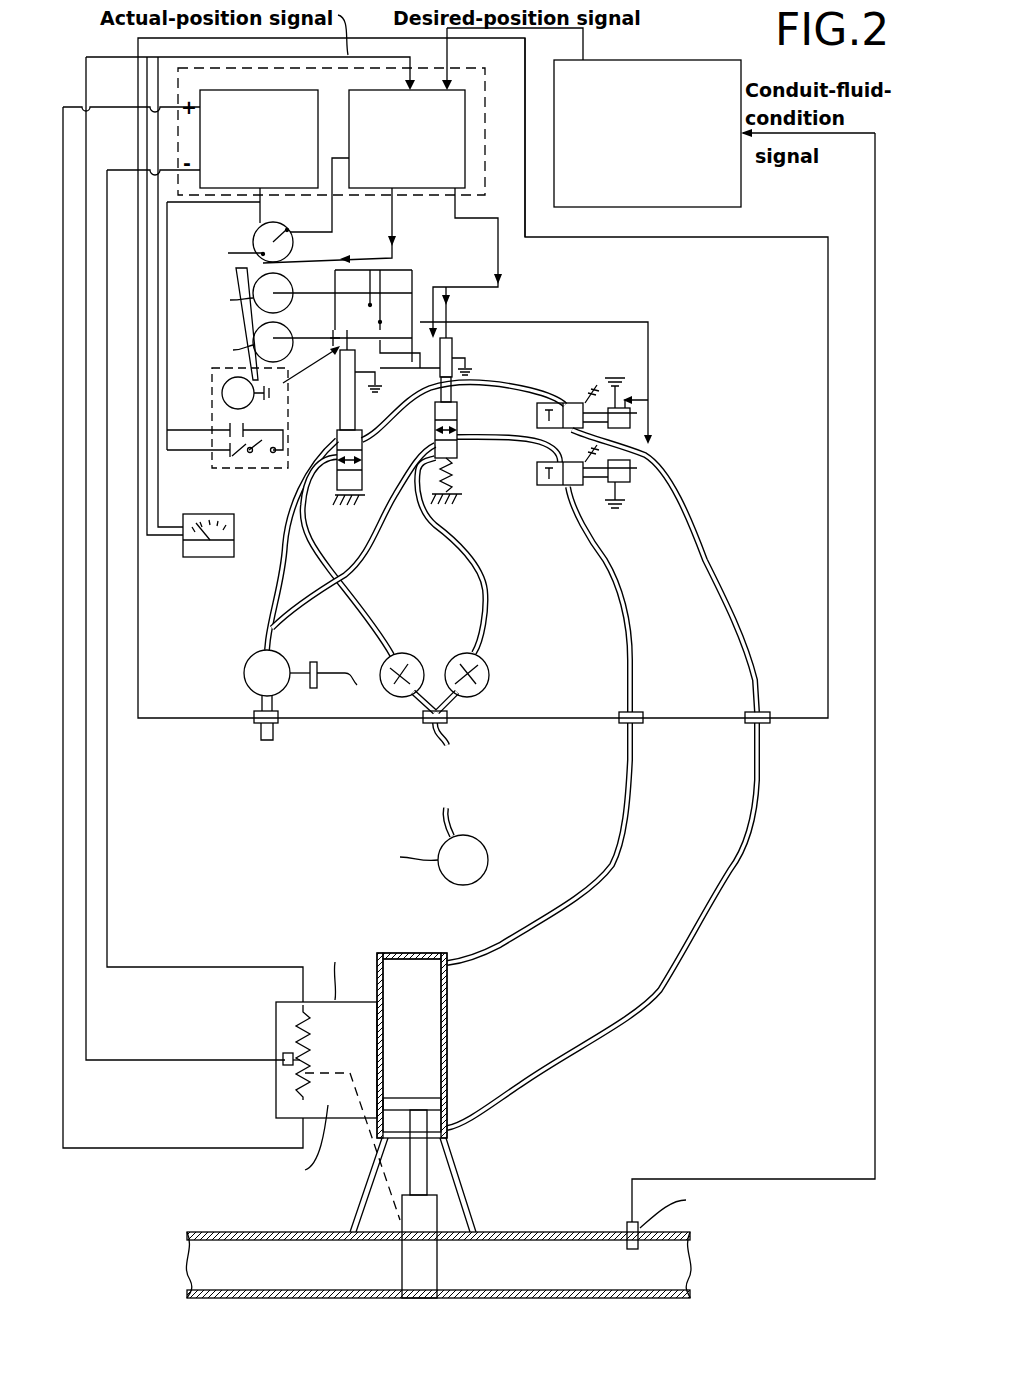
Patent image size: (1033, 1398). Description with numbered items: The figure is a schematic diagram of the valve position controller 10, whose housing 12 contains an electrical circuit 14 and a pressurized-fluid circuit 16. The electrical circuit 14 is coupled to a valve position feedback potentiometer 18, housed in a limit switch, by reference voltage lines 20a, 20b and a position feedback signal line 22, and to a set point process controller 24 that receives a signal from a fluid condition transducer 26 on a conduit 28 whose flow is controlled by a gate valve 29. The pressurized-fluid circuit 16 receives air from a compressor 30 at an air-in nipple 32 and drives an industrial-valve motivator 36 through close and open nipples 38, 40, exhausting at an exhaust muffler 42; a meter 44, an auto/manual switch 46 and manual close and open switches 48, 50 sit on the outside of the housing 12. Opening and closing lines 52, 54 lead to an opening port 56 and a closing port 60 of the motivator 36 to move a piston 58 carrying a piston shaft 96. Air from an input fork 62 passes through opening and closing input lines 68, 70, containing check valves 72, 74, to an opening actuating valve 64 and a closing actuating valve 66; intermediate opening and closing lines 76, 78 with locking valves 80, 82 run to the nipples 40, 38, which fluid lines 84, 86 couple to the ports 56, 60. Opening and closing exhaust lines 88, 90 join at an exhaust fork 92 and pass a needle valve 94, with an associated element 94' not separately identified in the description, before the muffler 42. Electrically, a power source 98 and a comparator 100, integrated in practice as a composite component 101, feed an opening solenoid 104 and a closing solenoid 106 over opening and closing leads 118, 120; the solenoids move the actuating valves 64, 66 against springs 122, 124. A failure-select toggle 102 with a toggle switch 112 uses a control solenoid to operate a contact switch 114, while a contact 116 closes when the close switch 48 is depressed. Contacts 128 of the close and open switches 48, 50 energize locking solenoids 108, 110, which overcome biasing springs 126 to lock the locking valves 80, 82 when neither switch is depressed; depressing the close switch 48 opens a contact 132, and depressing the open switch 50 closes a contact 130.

The valve position controller 10 is at (782, 258).
The housing 12 is at (753, 675).
The electrical circuit 14 is at (583, 301).
The pressurized-fluid circuit 16 is at (738, 590).
The valve position feedback potentiometer 18 is at (283, 1000).
The reference voltage line 20a is at (124, 170).
The reference voltage line 20b is at (106, 107).
The position feedback signal line 22 is at (108, 55).
The set point process controller 24 is at (665, 73).
The fluid condition transducer 26 is at (640, 1248).
The conduit 28 is at (545, 1231).
The gate valve 29 is at (410, 1268).
The compressor 30 is at (488, 857).
The air-in nipple 32 is at (446, 735).
The fluid-pressure industrial-valve motivator 36 is at (448, 1025).
The close nipple 38 is at (619, 721).
The open nipple 40 is at (751, 725).
The exhaust muffler 42 is at (258, 733).
The meter 44 is at (183, 545).
The auto/manual switch 46 is at (256, 232).
The manual close switch 48 is at (240, 330).
The manual open switch 50 is at (236, 268).
The opening line 52 is at (345, 590).
The closing line 54 is at (485, 575).
The opening port 56 is at (428, 1130).
The piston 58 is at (420, 1103).
The closing port 60 is at (447, 960).
The input fork 62 is at (450, 710).
The opening actuating valve 64 is at (358, 434).
The closing actuating valve 66 is at (457, 414).
The opening input line 68 is at (368, 620).
The closing input line 70 is at (487, 600).
The opening check valve 72 is at (403, 654).
The closing check valve 74 is at (490, 677).
The intermediate opening line 76 is at (698, 545).
The intermediate closing line 78 is at (604, 560).
The opening locking valve 80 is at (560, 403).
The closing locking valve 82 is at (552, 486).
The fluid line 84 is at (730, 880).
The fluid line 86 is at (615, 862).
The opening exhaust line 88 is at (280, 575).
The closing exhaust line 90 is at (318, 595).
The exhaust fork 92 is at (272, 620).
The needle valve 94 is at (241, 680).
The vent valve actuator 94' is at (334, 683).
The piston shaft 96 is at (420, 1167).
The power source 98 is at (310, 117).
The comparator 100 is at (457, 108).
The composite component 101 is at (525, 123).
The failure-select toggle 102 is at (212, 465).
The opening solenoid 104 is at (340, 378).
The closing solenoid 106 is at (453, 358).
The locking solenoid 108 is at (637, 440).
The locking solenoid 110 is at (640, 482).
The toggle switch 112 is at (262, 468).
The contact switch 114 is at (228, 425).
The contact 116 is at (325, 340).
The opening lead 118 is at (396, 218).
The closing lead 120 is at (486, 225).
The spring 122 is at (365, 490).
The spring 124 is at (460, 474).
The biasing springs 126 is at (585, 400).
The contacts 128 is at (425, 280).
The contact 130 is at (363, 277).
The contact 132 is at (437, 327).